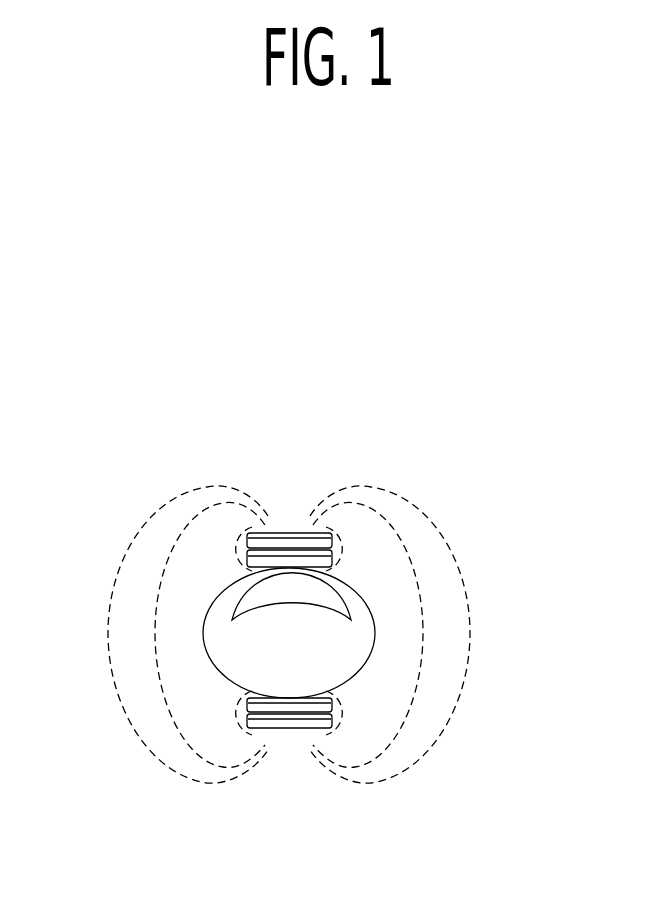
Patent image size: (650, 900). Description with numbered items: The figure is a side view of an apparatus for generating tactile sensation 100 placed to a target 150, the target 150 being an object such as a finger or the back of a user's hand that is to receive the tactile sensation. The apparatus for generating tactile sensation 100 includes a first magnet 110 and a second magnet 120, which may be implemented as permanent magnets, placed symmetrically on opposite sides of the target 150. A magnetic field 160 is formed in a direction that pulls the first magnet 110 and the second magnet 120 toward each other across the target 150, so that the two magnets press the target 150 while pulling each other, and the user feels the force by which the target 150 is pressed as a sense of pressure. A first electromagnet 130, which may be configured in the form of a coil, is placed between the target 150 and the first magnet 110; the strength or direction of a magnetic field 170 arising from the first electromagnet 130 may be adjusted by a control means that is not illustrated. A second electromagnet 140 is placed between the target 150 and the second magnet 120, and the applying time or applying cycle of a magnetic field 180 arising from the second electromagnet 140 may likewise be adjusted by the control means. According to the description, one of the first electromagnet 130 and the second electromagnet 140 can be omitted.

The apparatus for generating tactile sensation 100 is at (126, 386).
The first magnet 110 is at (245, 542).
The second magnet 120 is at (245, 718).
The first electromagnet 130 is at (245, 560).
The second electromagnet 140 is at (245, 700).
The target 150 is at (203, 633).
The magnetic field 160 is at (402, 540).
The magnetic field 170 is at (353, 553).
The magnetic field 180 is at (350, 712).